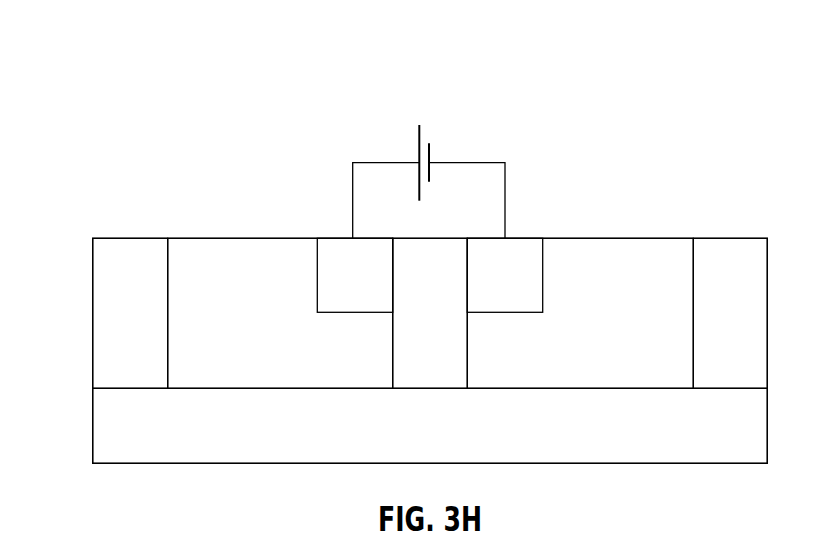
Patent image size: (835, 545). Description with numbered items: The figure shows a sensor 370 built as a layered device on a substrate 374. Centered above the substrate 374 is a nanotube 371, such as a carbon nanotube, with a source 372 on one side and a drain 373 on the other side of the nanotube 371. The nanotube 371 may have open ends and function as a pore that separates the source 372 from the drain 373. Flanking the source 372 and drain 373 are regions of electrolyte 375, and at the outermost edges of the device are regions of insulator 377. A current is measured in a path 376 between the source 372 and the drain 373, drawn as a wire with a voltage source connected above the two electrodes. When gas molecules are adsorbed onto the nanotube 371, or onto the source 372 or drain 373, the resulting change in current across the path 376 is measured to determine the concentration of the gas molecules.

The sensor 370 is at (92, 70).
The nanotube 371 is at (450, 334).
The source 372 is at (375, 288).
The drain 373 is at (527, 288).
The substrate 374 is at (450, 438).
The electrolyte 375 is at (281, 324).
The path 376 is at (505, 146).
The insulator 377 is at (152, 324).